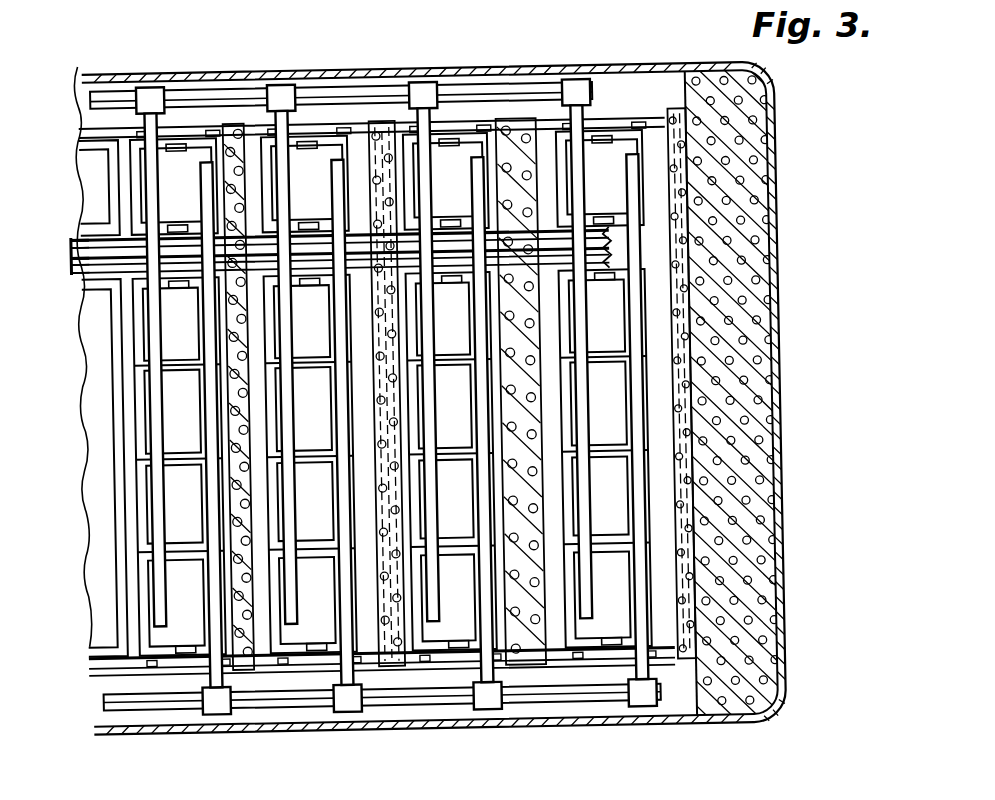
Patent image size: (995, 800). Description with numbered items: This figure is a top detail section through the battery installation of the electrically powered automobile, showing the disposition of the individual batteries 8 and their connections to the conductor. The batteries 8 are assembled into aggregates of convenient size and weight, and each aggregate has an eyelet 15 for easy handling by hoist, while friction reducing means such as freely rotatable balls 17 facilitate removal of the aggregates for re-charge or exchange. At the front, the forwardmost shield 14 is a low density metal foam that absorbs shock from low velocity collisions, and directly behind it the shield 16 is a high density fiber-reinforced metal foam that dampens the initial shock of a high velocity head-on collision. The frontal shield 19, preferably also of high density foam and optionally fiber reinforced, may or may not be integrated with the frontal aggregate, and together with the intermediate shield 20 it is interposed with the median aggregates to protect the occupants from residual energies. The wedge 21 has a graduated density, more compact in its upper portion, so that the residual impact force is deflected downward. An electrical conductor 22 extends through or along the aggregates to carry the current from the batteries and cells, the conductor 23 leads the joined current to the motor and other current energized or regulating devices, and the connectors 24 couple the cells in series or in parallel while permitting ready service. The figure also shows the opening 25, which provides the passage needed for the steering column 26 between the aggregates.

The batteries 8 is at (613, 155).
The forwardmost foam shield 14 is at (778, 118).
The eyelet 15 is at (188, 143).
The high density fiber-reinforced metal foam shield 16 is at (680, 124).
The freely rotatable balls 17 is at (273, 128).
The frontal shield 19 is at (505, 122).
The intermediate shield 20 is at (383, 121).
The wedge 21 is at (241, 120).
The electrical conductor 22 is at (338, 412).
The conductor 23 is at (221, 93).
The connectors 24 is at (294, 85).
The opening 25 is at (607, 261).
The steering column 26 is at (78, 241).